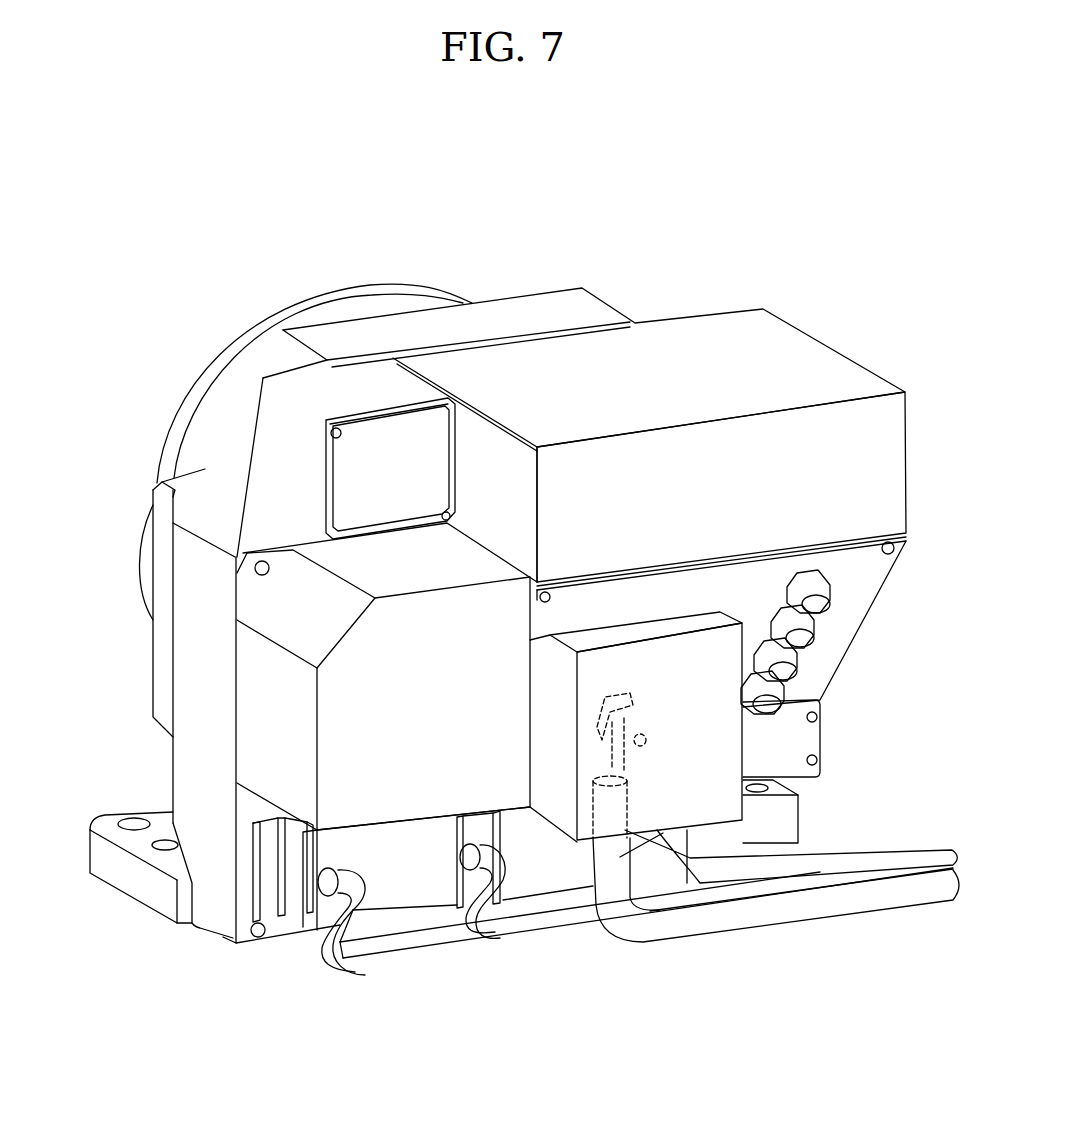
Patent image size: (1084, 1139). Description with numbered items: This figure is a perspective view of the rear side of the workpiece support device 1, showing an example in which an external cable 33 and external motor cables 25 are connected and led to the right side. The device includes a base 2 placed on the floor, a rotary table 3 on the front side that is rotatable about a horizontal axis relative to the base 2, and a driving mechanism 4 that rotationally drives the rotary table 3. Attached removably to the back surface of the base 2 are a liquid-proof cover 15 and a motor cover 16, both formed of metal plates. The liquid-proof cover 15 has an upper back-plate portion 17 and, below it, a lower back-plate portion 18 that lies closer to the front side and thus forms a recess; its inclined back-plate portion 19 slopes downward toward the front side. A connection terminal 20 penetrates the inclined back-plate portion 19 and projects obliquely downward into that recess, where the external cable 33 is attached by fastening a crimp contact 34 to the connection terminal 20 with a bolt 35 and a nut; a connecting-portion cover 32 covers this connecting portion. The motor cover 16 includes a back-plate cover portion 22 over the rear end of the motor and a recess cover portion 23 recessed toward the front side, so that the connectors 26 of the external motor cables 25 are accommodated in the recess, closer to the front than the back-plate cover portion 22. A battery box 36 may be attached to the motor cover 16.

The workpiece support device 1 is at (150, 338).
The base 2 is at (135, 885).
The rotary table 3 is at (367, 280).
The driving mechanism 4 is at (115, 525).
The liquid-proof cover 15 is at (690, 338).
The motor cover 16 is at (258, 742).
The upper back-plate portion 17 is at (848, 436).
The lower back-plate portion 18 is at (798, 742).
The inclined back-plate portion 19 is at (833, 627).
The connection terminal 20 is at (637, 762).
The back-plate cover portion 22 is at (490, 787).
The recess cover portion 23 is at (243, 908).
The external motor cables 25 is at (400, 970).
The connectors 26 is at (293, 905).
The connecting-portion cover 32 is at (704, 812).
The external cable 33 is at (803, 908).
The crimp contact 34 is at (600, 768).
The bolt 35 is at (600, 743).
The battery box 36 is at (348, 473).